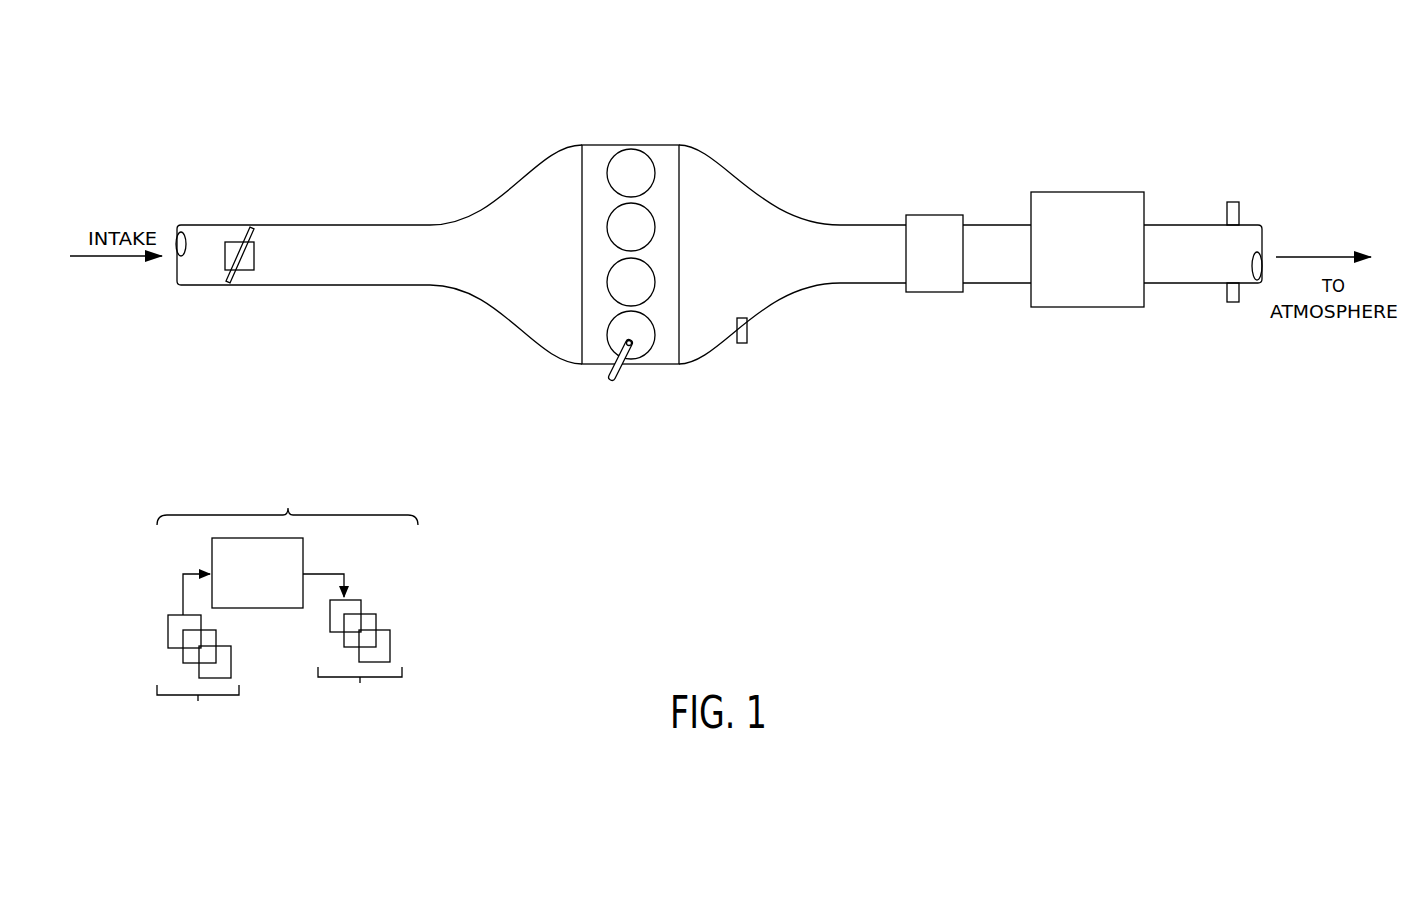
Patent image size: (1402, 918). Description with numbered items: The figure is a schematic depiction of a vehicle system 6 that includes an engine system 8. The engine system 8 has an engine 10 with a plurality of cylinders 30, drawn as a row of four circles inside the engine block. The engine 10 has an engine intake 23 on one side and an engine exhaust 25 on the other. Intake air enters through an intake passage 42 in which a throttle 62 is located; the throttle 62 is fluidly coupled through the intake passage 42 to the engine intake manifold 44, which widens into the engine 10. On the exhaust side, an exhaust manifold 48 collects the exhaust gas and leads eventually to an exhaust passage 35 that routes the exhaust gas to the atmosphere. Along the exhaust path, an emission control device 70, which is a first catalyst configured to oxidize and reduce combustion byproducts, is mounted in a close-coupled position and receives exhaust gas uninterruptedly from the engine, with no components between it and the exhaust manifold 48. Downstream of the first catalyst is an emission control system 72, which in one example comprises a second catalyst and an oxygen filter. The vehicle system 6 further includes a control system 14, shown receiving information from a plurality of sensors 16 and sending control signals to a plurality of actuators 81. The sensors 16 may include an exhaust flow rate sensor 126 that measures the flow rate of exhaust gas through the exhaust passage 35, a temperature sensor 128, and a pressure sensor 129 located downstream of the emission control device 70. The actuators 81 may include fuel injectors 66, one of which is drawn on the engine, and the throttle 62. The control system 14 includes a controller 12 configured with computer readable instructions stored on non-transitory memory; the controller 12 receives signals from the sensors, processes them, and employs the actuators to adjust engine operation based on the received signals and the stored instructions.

The vehicle system 6 is at (128, 83).
The engine system 8 is at (650, 218).
The engine 10 is at (680, 235).
The controller 12 is at (257, 573).
The control system 14 is at (288, 515).
The sensors 16 is at (198, 679).
The engine intake 23 is at (370, 213).
The engine exhaust 25 is at (790, 196).
The cylinders 30 is at (655, 170).
The exhaust passage 35 is at (1190, 224).
The intake passage 42 is at (290, 286).
The engine intake manifold 44 is at (541, 266).
The exhaust manifold 48 is at (761, 266).
The throttle 62 is at (254, 264).
The fuel injectors 66 is at (621, 370).
The emission control device 70 is at (944, 265).
The emission control system 72 is at (1097, 263).
The actuators 81 is at (360, 662).
The exhaust flow rate sensor 126 is at (747, 326).
The temperature sensor 128 is at (1227, 292).
The pressure sensor 129 is at (1227, 214).